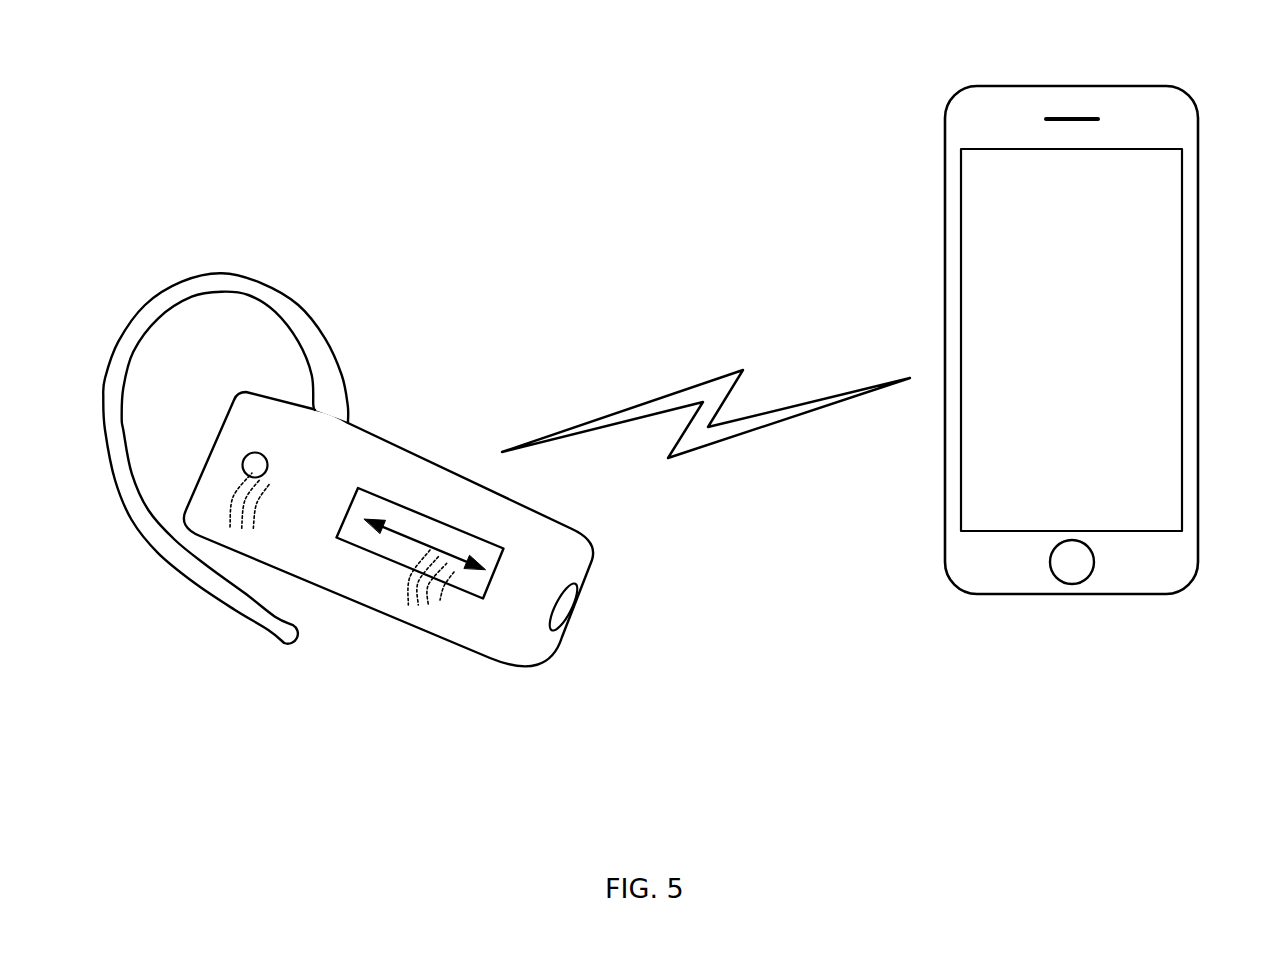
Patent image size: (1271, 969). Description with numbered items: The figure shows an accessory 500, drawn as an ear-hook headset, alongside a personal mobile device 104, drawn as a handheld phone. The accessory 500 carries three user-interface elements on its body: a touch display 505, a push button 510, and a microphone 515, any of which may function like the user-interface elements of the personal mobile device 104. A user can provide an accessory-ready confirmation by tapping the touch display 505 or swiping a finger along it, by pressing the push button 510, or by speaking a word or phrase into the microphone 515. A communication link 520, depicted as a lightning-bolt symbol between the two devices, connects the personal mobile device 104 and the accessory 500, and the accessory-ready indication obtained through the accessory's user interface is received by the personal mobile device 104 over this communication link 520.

The accessory 500 is at (210, 272).
The push button 510 is at (257, 478).
The touch display 505 is at (490, 592).
The microphone 515 is at (576, 588).
The communication link 520 is at (717, 377).
The personal mobile device 104 is at (986, 85).